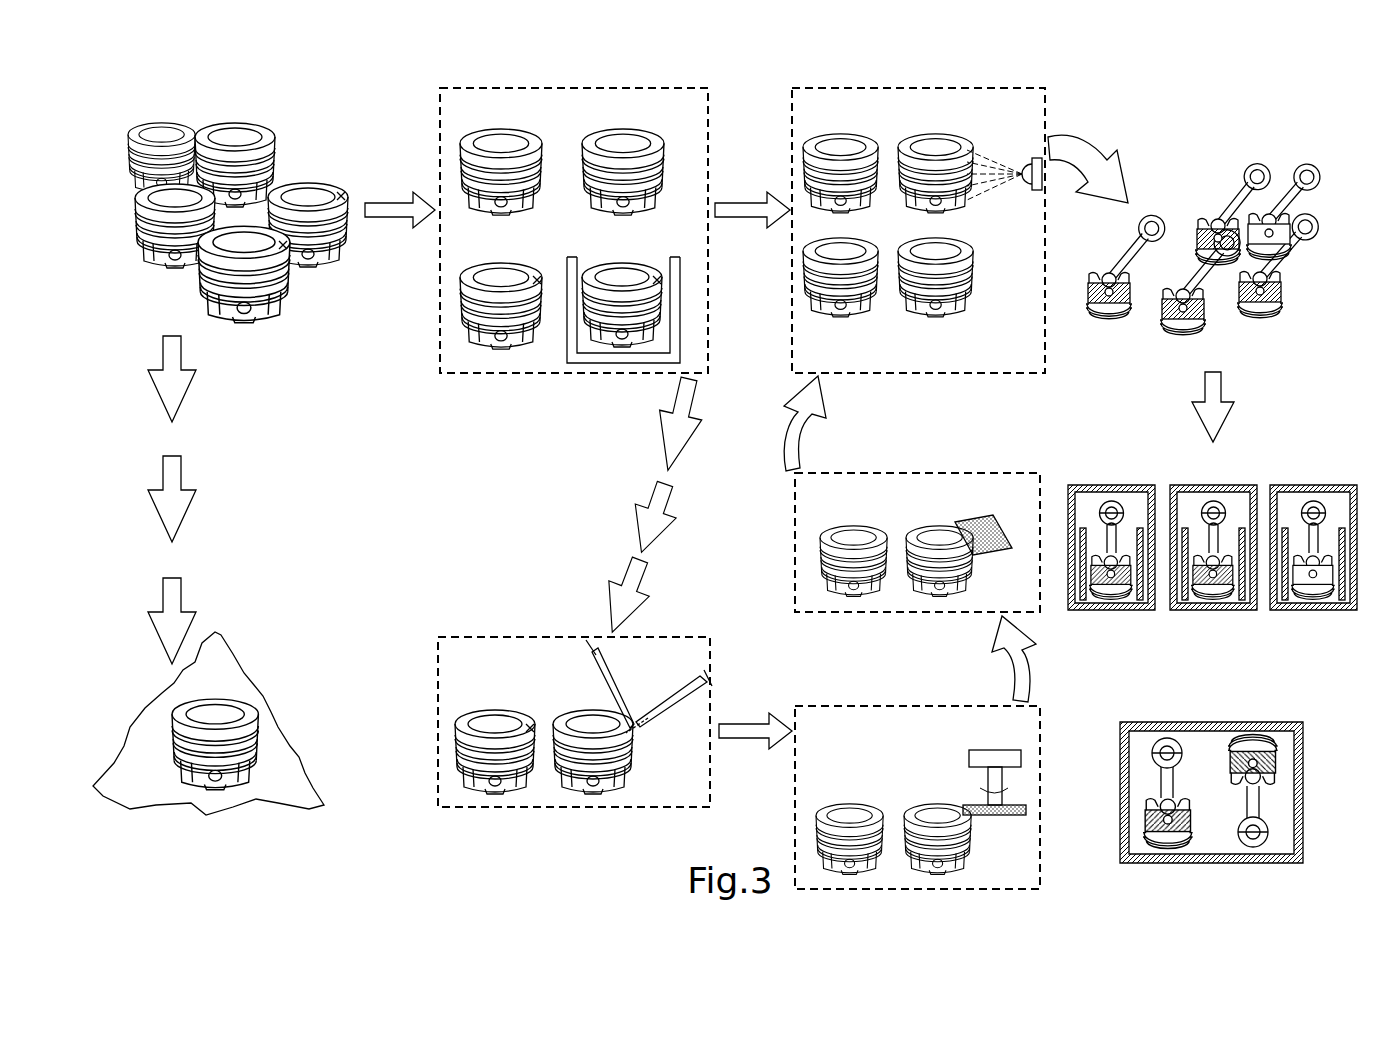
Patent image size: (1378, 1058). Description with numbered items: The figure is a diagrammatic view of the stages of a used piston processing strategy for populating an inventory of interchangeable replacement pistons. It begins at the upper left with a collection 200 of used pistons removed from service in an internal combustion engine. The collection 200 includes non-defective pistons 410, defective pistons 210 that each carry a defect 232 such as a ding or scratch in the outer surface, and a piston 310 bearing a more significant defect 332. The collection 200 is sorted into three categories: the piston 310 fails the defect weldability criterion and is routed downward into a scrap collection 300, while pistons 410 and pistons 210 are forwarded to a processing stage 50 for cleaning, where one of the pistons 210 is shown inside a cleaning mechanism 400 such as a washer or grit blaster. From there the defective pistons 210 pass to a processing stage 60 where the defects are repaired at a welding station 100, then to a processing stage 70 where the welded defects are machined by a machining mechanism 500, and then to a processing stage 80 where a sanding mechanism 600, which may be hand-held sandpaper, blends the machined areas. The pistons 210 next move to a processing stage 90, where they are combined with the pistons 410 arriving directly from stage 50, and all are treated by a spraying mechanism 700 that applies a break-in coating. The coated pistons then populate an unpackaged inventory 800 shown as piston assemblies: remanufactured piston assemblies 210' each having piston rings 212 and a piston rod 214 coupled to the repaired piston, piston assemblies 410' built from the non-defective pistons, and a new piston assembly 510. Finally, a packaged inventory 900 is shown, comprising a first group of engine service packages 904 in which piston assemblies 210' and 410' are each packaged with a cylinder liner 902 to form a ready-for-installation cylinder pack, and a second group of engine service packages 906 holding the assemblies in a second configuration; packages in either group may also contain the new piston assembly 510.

The collection of used pistons 200 is at (197, 115).
The defective piston 210 is at (561, 528).
The defect 232 is at (339, 192).
The defect 332 is at (138, 204).
The defective piston 310 is at (134, 248).
The scrap collection 300 is at (258, 676).
The non-defective piston 410 is at (546, 150).
The processing stage 50 is at (438, 106).
The cleaning mechanism 400 is at (683, 256).
The processing stage 60 is at (438, 666).
The welding station 100 is at (588, 696).
The processing stage 70 is at (792, 798).
The machining mechanism 500 is at (972, 749).
The processing stage 80 is at (792, 502).
The sanding mechanism 600 is at (1010, 527).
The processing stage 90 is at (790, 106).
The spraying mechanism 700 is at (1025, 156).
The unpackaged inventory 800 is at (1328, 152).
The piston assembly 410' is at (1174, 528).
The remanufactured piston assembly 210' is at (1182, 530).
The new piston assembly 510 is at (1305, 199).
The piston rod 214 is at (1296, 257).
The piston rings 212 is at (1296, 304).
The cylinder liner 902 is at (1094, 523).
The engine service package 904 is at (1130, 483).
The engine service package 906 is at (1170, 720).
The packaged inventory 900 is at (1328, 740).